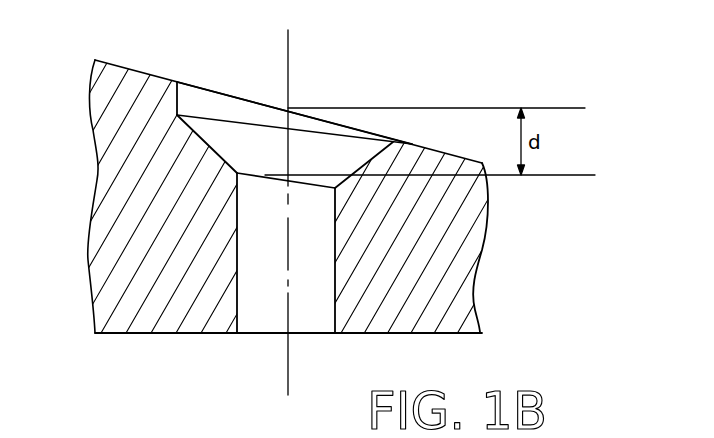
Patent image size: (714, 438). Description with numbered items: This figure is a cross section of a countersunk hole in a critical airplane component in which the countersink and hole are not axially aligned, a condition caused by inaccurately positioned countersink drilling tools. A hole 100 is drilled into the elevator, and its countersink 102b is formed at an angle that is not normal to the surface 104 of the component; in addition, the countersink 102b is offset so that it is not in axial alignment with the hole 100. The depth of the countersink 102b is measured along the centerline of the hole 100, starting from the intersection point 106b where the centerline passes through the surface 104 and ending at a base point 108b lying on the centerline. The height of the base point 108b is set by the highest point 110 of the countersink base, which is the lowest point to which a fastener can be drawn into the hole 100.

The hole 100 is at (258, 236).
The countersink 102b is at (336, 155).
The surface 104 is at (137, 63).
The intersection point 106b is at (290, 108).
The base point 108b is at (277, 168).
The highest point of the base of the countersink 110 is at (235, 173).